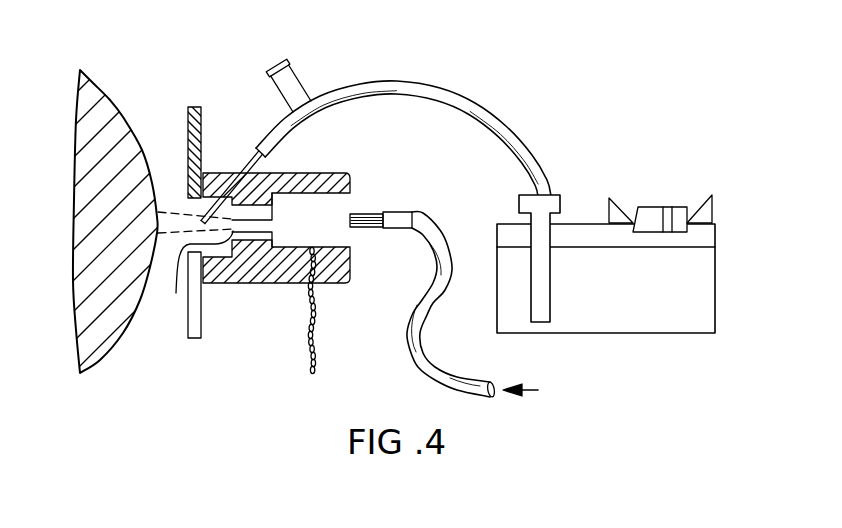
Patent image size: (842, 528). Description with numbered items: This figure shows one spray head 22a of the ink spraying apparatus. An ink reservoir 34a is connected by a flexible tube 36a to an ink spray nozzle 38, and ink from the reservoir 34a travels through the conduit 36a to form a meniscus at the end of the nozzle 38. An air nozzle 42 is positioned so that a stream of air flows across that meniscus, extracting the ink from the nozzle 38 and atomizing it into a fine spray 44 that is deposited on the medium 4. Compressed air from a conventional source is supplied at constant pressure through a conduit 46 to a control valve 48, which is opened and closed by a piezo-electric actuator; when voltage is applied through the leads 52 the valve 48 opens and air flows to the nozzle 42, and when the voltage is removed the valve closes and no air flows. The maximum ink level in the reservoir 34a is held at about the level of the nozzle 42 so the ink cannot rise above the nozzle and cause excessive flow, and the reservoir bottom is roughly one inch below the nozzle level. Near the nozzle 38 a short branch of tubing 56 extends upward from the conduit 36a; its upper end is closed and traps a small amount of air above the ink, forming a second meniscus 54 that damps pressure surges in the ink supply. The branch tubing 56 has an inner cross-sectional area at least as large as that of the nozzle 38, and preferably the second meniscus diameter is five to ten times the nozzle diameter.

The medium 4 is at (119, 101).
The spray head 22a is at (391, 135).
The ink reservoir 34a is at (716, 292).
The flexible tube 36a is at (522, 141).
The ink spray nozzle 38 is at (203, 191).
The air nozzle 42 is at (190, 274).
The fine spray 44 is at (168, 207).
The conduit 46 is at (446, 236).
The control valve 48 is at (326, 214).
The leads 52 is at (309, 336).
The second meniscus 54 is at (290, 96).
The branch tubing 56 is at (269, 87).